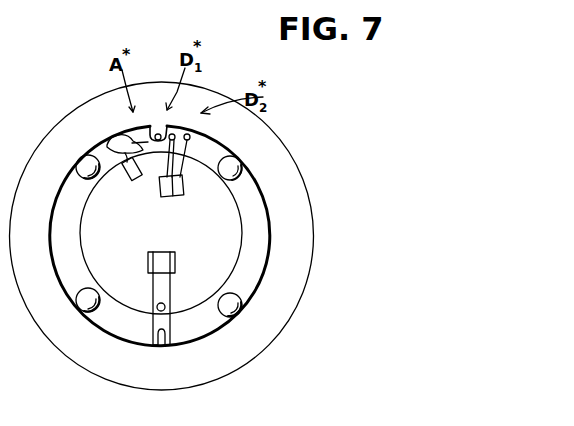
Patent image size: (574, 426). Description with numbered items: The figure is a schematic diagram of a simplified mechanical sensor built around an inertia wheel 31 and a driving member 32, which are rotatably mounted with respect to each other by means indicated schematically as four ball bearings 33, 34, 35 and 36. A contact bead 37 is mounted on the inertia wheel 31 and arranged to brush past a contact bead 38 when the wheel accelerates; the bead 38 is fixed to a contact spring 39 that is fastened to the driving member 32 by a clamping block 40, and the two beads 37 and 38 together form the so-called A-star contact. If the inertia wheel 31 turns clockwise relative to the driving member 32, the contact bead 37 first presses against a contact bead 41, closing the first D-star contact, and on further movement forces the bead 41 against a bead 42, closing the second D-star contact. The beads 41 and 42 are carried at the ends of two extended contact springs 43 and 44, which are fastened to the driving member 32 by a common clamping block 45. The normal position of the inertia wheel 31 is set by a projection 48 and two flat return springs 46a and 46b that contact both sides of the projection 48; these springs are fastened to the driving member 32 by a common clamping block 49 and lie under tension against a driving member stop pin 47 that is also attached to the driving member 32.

The inertia wheel 31 is at (287, 186).
The driving member 32 is at (231, 245).
The ball bearing 33 is at (230, 170).
The ball bearing 34 is at (236, 310).
The ball bearing 35 is at (79, 310).
The ball bearing 36 is at (80, 165).
The contact bead 37 is at (153, 120).
The contact bead 38 is at (137, 129).
The contact spring 39 is at (109, 139).
The clamping block 40 is at (124, 181).
The contact bead 41 is at (186, 120).
The contact bead 42 is at (190, 138).
The contact spring 43 is at (158, 180).
The contact spring 44 is at (184, 177).
The clamping block 45 is at (174, 197).
The flat return spring 46a is at (152, 296).
The flat return spring 46b is at (171, 296).
The driving member stop pin 47 is at (157, 310).
The projection 48 is at (161, 348).
The clamping block 49 is at (148, 256).